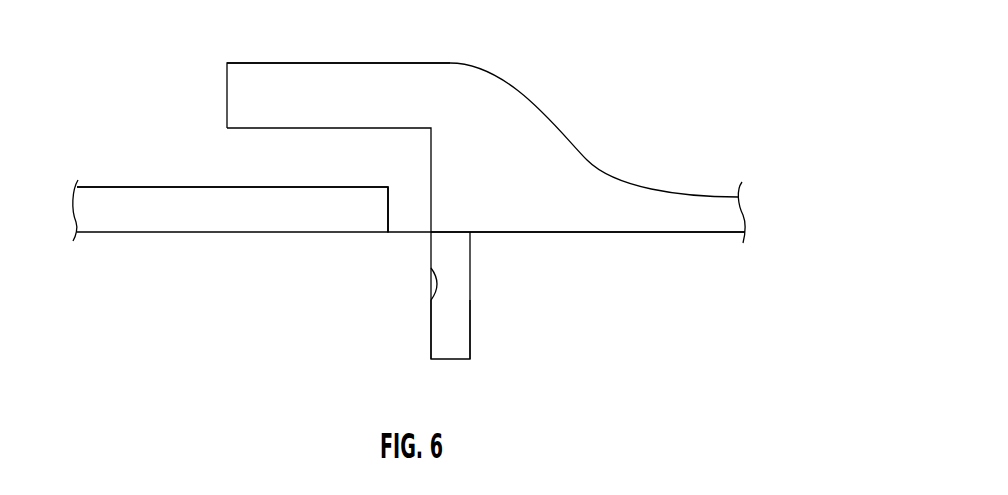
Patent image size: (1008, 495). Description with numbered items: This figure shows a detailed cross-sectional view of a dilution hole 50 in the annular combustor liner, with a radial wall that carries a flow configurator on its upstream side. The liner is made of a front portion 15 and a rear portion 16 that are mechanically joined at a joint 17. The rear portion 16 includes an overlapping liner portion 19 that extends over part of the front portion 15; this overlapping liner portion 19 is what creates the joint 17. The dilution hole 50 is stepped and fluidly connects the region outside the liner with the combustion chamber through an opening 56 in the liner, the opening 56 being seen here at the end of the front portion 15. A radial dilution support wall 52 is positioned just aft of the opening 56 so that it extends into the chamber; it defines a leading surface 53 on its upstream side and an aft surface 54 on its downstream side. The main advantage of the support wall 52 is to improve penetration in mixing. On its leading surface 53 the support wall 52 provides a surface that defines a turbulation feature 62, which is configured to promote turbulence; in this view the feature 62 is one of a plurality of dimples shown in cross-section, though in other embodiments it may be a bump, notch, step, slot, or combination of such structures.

The front portion 15 is at (160, 233).
The rear portion 16 is at (663, 233).
The joint 17 is at (527, 56).
The overlapping liner portion 19 is at (270, 63).
The dilution hole 50 is at (175, 127).
The radial dilution support wall 52 is at (471, 308).
The leading surface 53 is at (430, 338).
The aft surface 54 is at (471, 331).
The opening 56 is at (388, 233).
The turbulation feature 62 is at (430, 283).